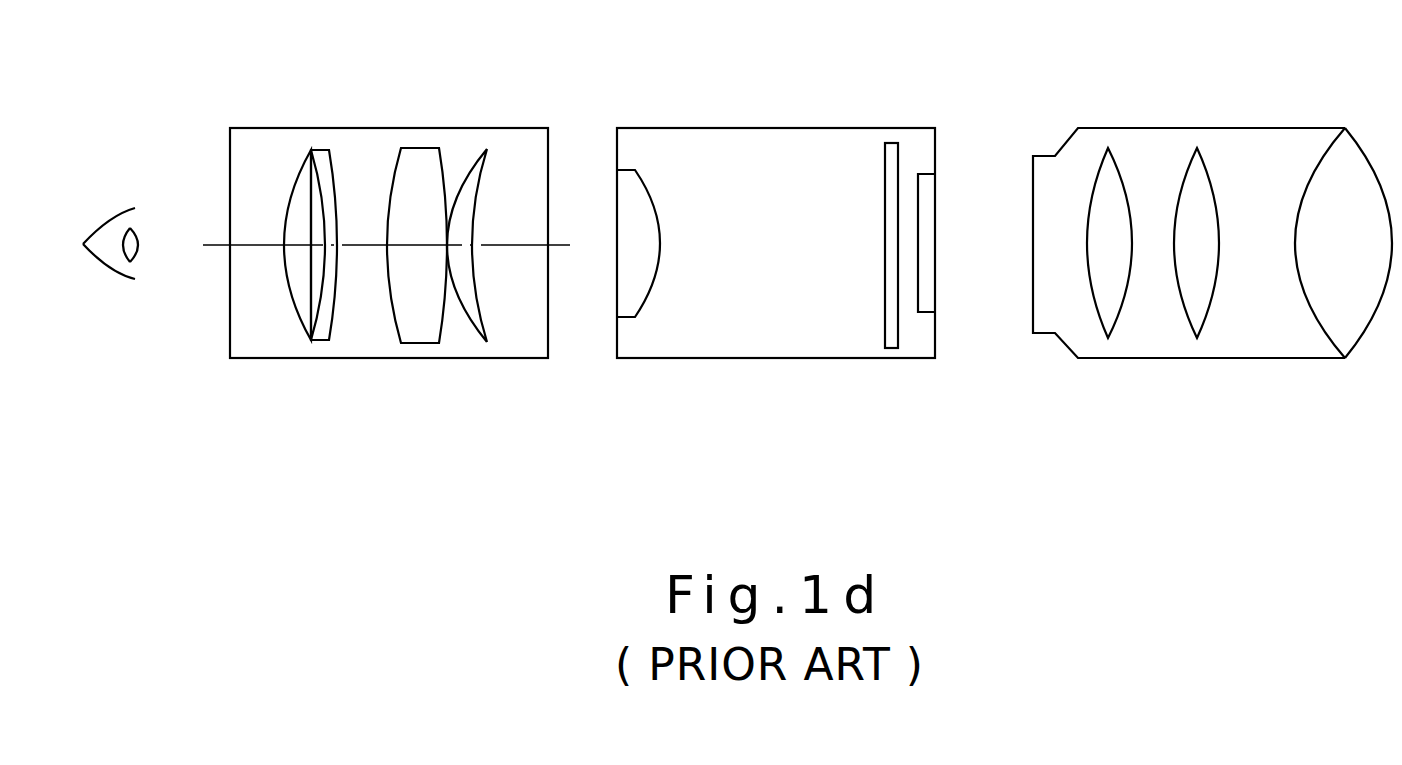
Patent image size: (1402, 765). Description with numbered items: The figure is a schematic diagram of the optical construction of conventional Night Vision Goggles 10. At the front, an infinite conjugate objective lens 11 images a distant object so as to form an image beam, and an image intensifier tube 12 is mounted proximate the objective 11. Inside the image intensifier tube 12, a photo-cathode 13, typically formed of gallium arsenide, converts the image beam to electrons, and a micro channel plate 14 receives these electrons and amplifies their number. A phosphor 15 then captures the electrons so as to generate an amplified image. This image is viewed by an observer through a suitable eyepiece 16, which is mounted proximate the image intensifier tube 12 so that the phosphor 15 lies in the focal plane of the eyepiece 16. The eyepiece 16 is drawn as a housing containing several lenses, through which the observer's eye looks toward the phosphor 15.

The Night Vision Goggles 10 is at (617, 398).
The infinite conjugate objective lens 11 is at (1255, 128).
The image intensifier tube 12 is at (712, 128).
The photo-cathode 13 is at (937, 222).
The micro channel plate 14 is at (883, 185).
The phosphor 15 is at (627, 220).
The eyepiece 16 is at (377, 128).